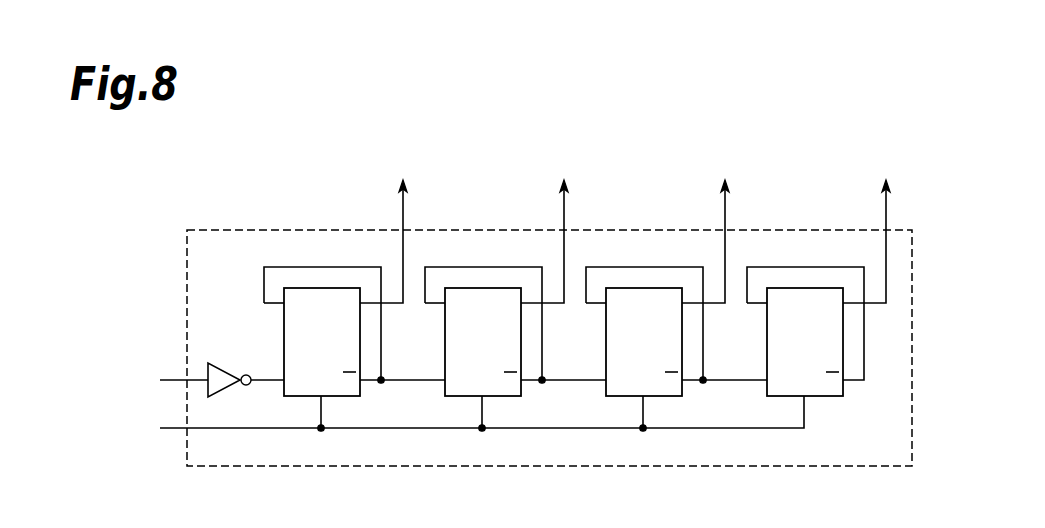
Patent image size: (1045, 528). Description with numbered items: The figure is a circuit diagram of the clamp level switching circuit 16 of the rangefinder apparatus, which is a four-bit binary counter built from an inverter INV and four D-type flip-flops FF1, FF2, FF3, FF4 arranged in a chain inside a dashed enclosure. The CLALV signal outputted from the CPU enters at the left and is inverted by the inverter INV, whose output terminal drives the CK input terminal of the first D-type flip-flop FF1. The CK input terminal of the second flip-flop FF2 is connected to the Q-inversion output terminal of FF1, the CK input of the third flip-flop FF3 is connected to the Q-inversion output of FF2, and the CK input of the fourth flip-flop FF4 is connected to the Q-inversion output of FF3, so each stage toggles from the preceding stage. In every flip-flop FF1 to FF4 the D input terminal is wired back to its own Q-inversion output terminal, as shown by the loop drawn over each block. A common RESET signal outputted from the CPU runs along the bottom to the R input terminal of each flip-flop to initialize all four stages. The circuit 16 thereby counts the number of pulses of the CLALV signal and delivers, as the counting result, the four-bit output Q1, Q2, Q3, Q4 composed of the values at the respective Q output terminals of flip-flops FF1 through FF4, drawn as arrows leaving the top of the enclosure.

The clamp level switching circuit 16 is at (257, 229).
The inverter INV is at (226, 362).
The D-type flip-flop FF1 is at (350, 397).
The D-type flip-flop FF2 is at (511, 397).
The D-type flip-flop FF3 is at (672, 397).
The D-type flip-flop FF4 is at (833, 397).
The output value of first flip-flop Q1 is at (383, 241).
The output value of second flip-flop Q2 is at (544, 241).
The output value of third flip-flop Q3 is at (705, 241).
The output value of fourth flip-flop Q4 is at (866, 241).
The CLALV signal CLALV is at (146, 380).
The RESET signal RESET is at (444, 417).